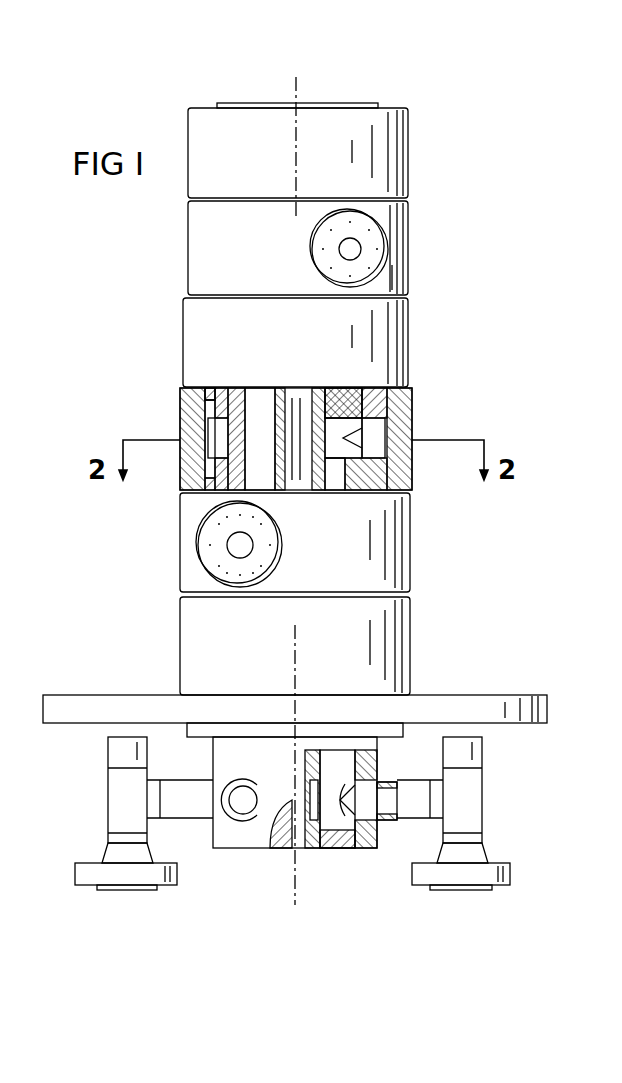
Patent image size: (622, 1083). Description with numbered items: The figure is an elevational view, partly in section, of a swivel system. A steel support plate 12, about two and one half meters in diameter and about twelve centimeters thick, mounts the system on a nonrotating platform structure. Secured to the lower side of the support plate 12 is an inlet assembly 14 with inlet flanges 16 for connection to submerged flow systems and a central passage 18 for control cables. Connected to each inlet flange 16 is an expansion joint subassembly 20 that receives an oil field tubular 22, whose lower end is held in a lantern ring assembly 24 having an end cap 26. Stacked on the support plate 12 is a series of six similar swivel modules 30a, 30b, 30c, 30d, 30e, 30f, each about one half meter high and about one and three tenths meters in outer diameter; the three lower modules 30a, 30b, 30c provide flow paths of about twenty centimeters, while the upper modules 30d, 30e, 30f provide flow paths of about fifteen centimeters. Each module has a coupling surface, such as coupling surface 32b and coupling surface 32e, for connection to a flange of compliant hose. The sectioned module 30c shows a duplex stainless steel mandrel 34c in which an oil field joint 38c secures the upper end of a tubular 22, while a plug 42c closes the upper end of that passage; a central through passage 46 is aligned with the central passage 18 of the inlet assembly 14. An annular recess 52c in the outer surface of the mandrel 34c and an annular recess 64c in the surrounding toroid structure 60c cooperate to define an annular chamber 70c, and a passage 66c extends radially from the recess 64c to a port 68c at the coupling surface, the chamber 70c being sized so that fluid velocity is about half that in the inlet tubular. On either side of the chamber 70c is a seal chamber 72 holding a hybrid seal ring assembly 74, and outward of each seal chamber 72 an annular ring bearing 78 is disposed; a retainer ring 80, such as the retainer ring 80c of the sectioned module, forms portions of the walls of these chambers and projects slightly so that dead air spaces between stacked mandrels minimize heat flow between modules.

The support plate 12 is at (548, 696).
The inlet assembly 14 is at (222, 852).
The inlet flanges 16 is at (77, 880).
The central passage 18 is at (285, 842).
The expansion joint subassembly 20 is at (384, 830).
The oil field tubular 22 is at (345, 757).
The lantern ring assembly 24 is at (312, 798).
The end cap 26 is at (343, 848).
The swivel module 30a is at (180, 628).
The swivel module 30b is at (180, 568).
The swivel module 30c is at (414, 390).
The swivel module 30d is at (410, 320).
The swivel module 30e is at (410, 227).
The swivel module 30f is at (410, 146).
The coupling surface 32b is at (200, 545).
The coupling surface 32e is at (312, 249).
The mandrel 34c is at (252, 396).
The oil field joint 38c is at (314, 480).
The plug 42c is at (340, 398).
The central through passage 46 is at (282, 487).
The annular recess 52c is at (228, 440).
The toroid structure 60c is at (190, 398).
The annular recess 64c is at (190, 437).
The passage 66c is at (395, 452).
The port 68c is at (412, 437).
The annular chamber 70c is at (218, 434).
The seal chamber 72 is at (352, 478).
The hybrid seal ring assembly 74 is at (390, 468).
The annular ring bearing 78 is at (395, 480).
The retainer ring 80 is at (370, 487).
The retainer ring 80c is at (222, 378).